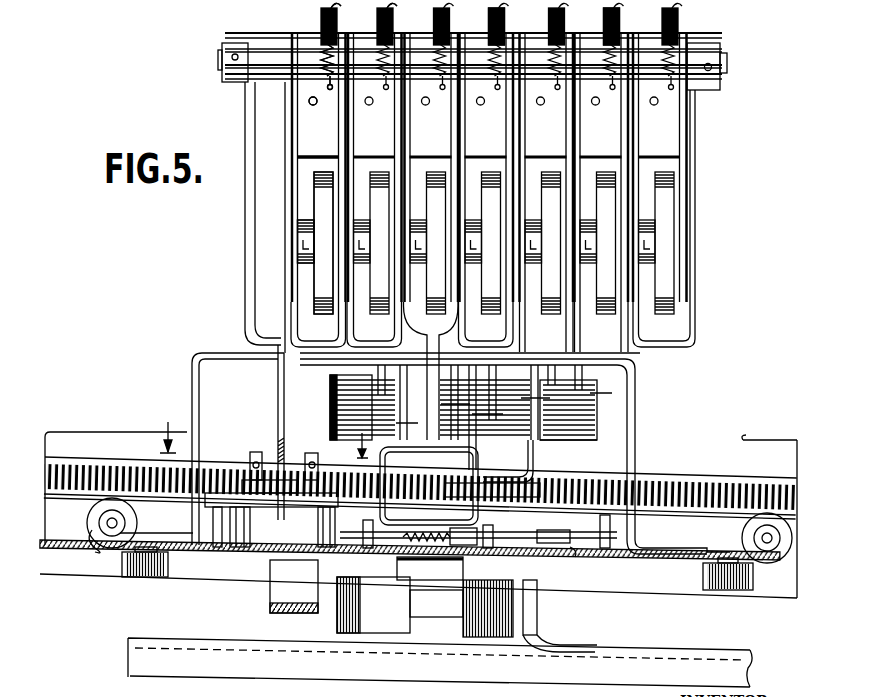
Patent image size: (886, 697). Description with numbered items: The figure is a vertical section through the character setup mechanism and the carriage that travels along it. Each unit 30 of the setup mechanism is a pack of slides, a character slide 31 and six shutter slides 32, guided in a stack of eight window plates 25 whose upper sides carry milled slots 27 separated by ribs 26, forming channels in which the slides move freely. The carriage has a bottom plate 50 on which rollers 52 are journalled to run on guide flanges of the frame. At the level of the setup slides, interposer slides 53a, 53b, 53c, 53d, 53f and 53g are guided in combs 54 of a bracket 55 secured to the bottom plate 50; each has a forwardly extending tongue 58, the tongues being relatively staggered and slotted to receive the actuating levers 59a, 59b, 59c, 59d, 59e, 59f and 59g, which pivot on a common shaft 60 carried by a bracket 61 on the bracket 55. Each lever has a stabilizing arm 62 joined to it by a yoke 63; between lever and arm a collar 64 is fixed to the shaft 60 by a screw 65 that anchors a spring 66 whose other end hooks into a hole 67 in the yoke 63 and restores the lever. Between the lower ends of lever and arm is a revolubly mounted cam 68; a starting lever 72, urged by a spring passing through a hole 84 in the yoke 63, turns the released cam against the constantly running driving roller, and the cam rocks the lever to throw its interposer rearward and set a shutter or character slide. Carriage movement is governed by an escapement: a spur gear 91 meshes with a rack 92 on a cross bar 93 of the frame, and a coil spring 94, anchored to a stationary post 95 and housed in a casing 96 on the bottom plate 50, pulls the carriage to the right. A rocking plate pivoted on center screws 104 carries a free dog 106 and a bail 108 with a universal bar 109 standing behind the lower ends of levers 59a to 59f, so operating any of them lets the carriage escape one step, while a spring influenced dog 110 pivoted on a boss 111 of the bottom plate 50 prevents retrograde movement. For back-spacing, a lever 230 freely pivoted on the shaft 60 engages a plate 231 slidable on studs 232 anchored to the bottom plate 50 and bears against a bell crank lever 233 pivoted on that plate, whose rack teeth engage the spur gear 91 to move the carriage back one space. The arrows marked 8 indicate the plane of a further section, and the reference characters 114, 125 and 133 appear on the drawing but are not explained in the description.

The section line arrow 8 is at (258, 441).
The window plates 25 is at (588, 431).
The ribs 26 is at (580, 392).
The milled slots 27 is at (588, 353).
The unit 30 is at (593, 410).
The character slide 31 is at (604, 353).
The shutter slides 32 is at (580, 442).
The bottom plate 50 is at (598, 552).
The rollers 52 is at (140, 570).
The interposer slide 53a is at (342, 443).
The interposer slide 53b is at (335, 432).
The interposer slide 53c is at (334, 413).
The interposer slide 53d is at (335, 381).
The interposer slide 53f is at (380, 353).
The interposer slide 53g is at (505, 385).
The combs 54 is at (333, 373).
The bracket 55 is at (636, 436).
The forwardly extending tongues 58 is at (480, 352).
The actuating lever 59a is at (297, 321).
The actuating lever 59b is at (278, 362).
The actuating lever 59c is at (400, 285).
The actuating lever 59d is at (463, 304).
The actuating lever 59e is at (526, 185).
The actuating lever 59f is at (583, 185).
The actuating lever 59g is at (680, 324).
The common shaft 60 is at (220, 63).
The bracket 61 is at (247, 217).
The stabilizing arm 62 is at (335, 43).
The yoke 63 is at (298, 157).
The collar 64 is at (315, 34).
The screw 65 is at (318, 14).
The spring 66 is at (320, 46).
The hole 67 is at (329, 90).
The cam 68 is at (322, 283).
The starting lever 72 is at (332, 268).
The hole 84 is at (313, 105).
The spur gear 91 is at (540, 477).
The rack 92 is at (655, 497).
The cross bar 93 is at (710, 476).
The coil spring 94 is at (430, 605).
The stationary post 95 is at (462, 571).
The casing 96 is at (337, 620).
The center screws 104 is at (531, 531).
The free dog 106 is at (403, 538).
The bail 108 is at (525, 473).
The universal bar 109 is at (477, 458).
The spring influenced dog 110 is at (530, 530).
The boss 111 is at (575, 548).
The pin 114 is at (370, 528).
The coil spring 125 is at (485, 22).
The coil spring 133 is at (560, 10).
The lever 230 is at (278, 395).
The plate 231 is at (305, 510).
The studs 232 is at (270, 558).
The bell crank lever 233 is at (273, 468).